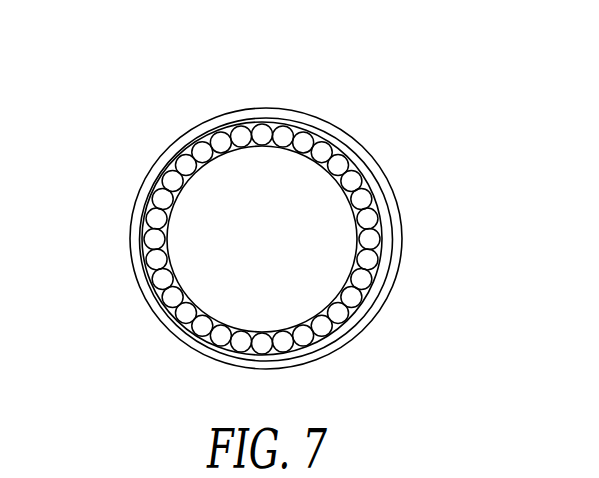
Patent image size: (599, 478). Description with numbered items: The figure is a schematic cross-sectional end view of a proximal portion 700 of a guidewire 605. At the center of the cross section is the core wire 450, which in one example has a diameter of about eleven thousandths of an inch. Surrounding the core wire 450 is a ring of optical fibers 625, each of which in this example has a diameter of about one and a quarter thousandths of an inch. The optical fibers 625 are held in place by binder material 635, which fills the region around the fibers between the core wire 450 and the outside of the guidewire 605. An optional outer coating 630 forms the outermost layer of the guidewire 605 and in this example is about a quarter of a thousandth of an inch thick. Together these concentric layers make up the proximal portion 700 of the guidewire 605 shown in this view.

The proximal portion 700 is at (160, 95).
The guidewire 605 is at (318, 120).
The outer coating 630 is at (365, 159).
The binder material 635 is at (172, 164).
The optical fibers 625 is at (375, 220).
The core wire 450 is at (233, 250).